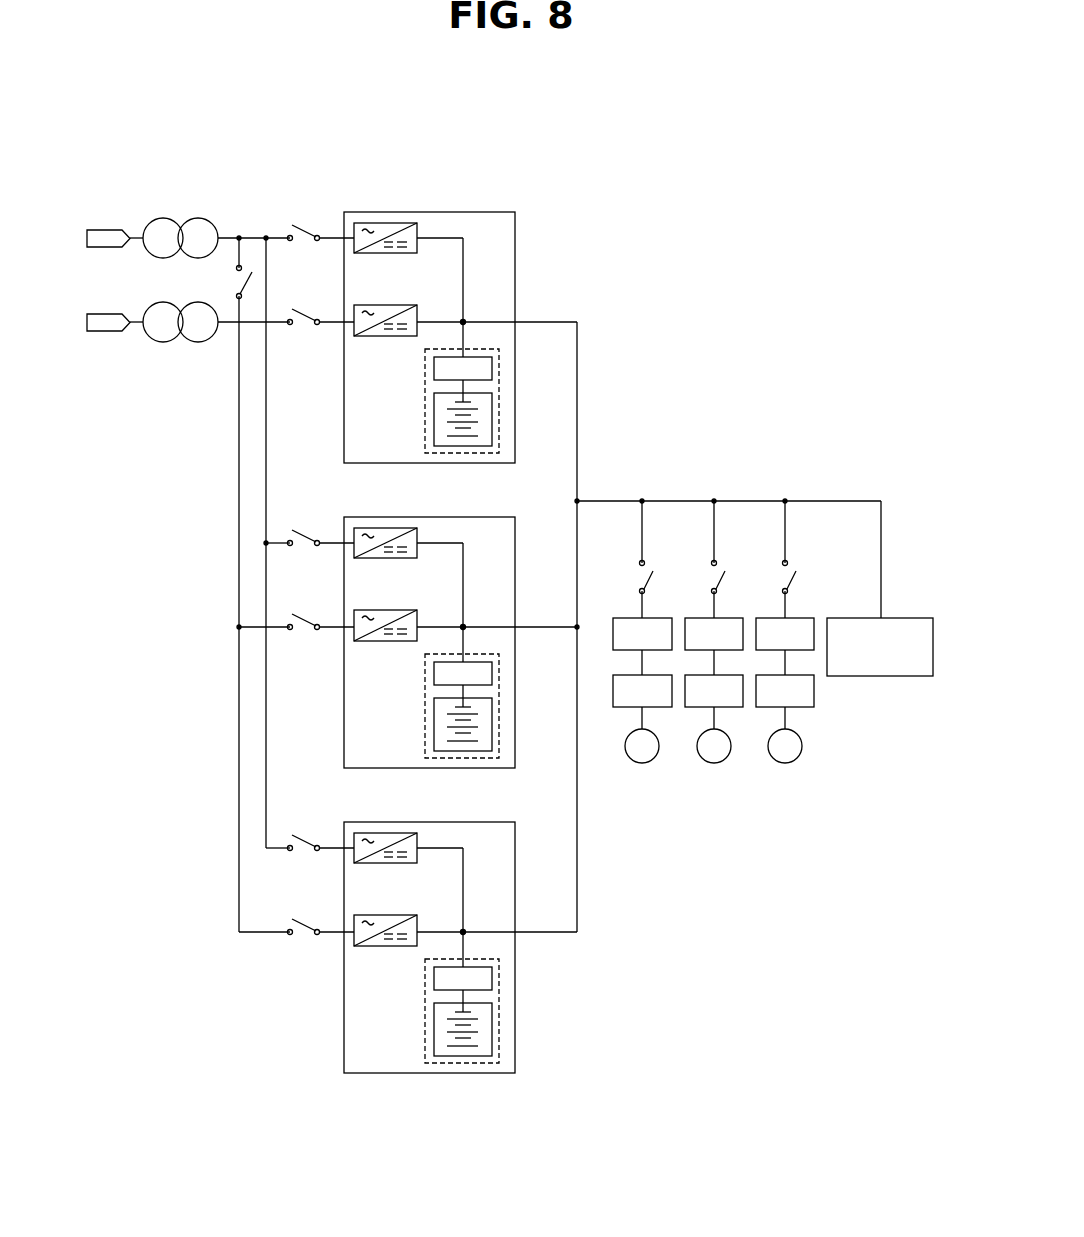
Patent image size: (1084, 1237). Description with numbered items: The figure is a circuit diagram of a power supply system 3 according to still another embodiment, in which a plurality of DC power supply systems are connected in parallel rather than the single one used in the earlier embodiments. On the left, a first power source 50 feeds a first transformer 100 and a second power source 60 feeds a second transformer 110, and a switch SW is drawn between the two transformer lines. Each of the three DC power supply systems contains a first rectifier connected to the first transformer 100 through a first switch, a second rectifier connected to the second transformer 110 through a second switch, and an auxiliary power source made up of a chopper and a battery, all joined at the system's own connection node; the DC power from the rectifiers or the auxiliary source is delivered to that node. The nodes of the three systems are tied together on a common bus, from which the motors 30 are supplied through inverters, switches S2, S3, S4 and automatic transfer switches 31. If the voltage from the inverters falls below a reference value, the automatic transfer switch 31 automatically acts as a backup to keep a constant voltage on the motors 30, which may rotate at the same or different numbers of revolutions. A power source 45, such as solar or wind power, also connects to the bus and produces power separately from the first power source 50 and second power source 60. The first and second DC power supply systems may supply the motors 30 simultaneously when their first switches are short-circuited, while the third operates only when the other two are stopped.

The power supply system 3 is at (512, 96).
The first power source 50 is at (102, 313).
The second power source 60 is at (102, 229).
The first transformer 100 is at (163, 302).
The second transformer 110 is at (163, 218).
The switch SW is at (229, 282).
The switch S2 is at (659, 577).
The switch S3 is at (731, 577).
The switch S4 is at (802, 577).
The motors 30 is at (700, 730).
The automatic transfer switch 31 is at (613, 707).
The power source 45 is at (880, 677).